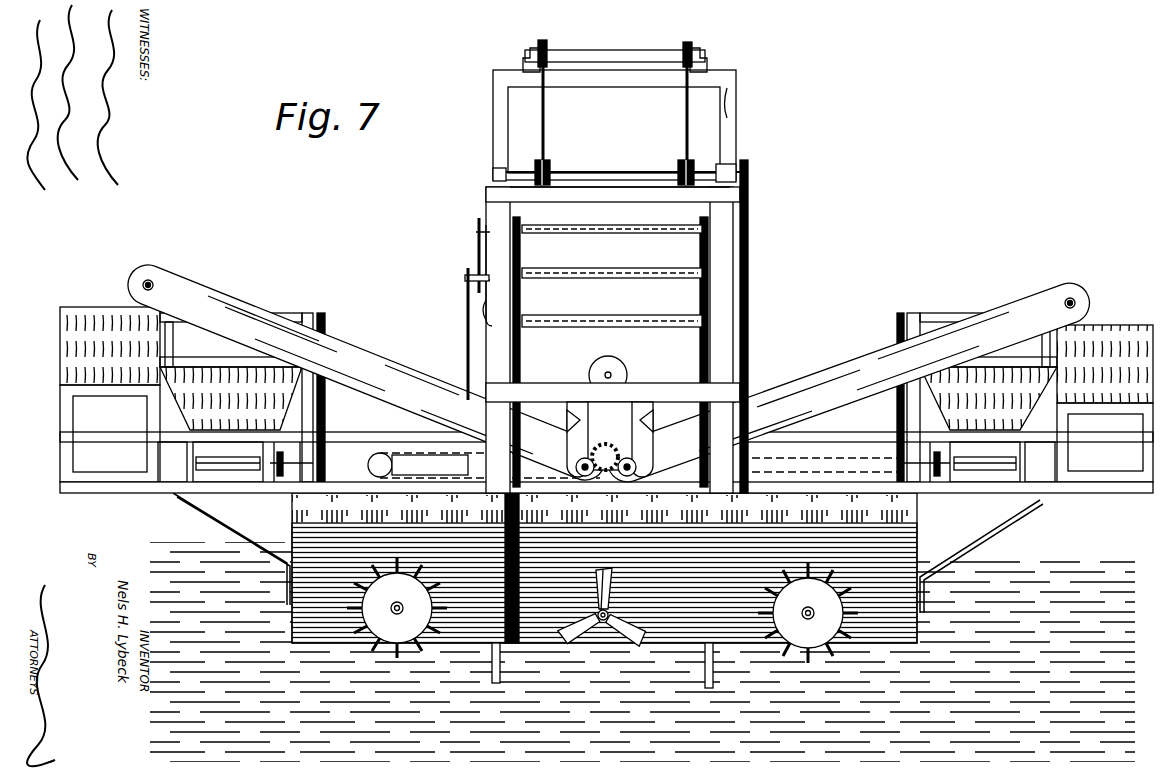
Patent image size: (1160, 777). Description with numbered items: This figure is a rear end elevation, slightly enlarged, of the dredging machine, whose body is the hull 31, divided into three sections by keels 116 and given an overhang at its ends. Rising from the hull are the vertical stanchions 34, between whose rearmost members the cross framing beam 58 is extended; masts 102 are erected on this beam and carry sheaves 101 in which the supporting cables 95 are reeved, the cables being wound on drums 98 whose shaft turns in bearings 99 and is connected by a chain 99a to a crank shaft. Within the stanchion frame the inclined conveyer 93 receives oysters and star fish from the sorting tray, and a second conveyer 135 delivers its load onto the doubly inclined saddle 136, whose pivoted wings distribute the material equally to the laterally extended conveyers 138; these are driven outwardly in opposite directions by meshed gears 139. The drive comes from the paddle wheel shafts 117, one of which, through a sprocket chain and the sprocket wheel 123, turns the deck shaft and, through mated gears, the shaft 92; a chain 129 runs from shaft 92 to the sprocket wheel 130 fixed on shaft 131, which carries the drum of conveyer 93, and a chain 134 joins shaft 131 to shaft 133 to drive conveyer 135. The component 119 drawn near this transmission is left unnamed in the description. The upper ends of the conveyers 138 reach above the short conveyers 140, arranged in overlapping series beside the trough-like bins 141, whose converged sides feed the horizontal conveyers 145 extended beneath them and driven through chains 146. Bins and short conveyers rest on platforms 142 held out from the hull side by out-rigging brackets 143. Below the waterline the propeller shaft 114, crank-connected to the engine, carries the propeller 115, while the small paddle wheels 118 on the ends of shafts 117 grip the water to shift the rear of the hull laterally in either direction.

The hull 31 is at (912, 522).
The vertical stanchions 34 is at (498, 317).
The cross framing beam 58 is at (607, 190).
The shaft 92 is at (337, 470).
The conveyer 93 is at (631, 233).
The supporting cable 95 is at (548, 120).
The drums 98 is at (552, 162).
The bearings 99 is at (493, 178).
The chain 99a is at (749, 282).
The sheaves 101 is at (547, 42).
The masts 102 is at (735, 82).
The propeller shaft 114 is at (610, 612).
The propeller 115 is at (617, 575).
The keels 116 is at (500, 673).
The shafts 117 is at (398, 612).
The paddle wheels 118 is at (423, 570).
The belt 119 is at (417, 455).
The sprocket wheel 123 is at (383, 455).
The chain 129 is at (467, 352).
The sprocket wheel 130 is at (468, 278).
The shaft 131 is at (482, 220).
The shaft 133 is at (487, 286).
The chain 134 is at (478, 248).
The conveyer 135 is at (578, 313).
The doubly inclined saddle 136 is at (625, 376).
The laterally extended conveyers 138 is at (353, 361).
The meshed gears 139 is at (610, 439).
The short conveyers 140 is at (88, 313).
The trough-like bins 141 is at (227, 382).
The platforms 142 is at (95, 484).
The out-rigging brackets 143 is at (230, 527).
The conveyers 145 is at (210, 467).
The chains 146 is at (325, 403).